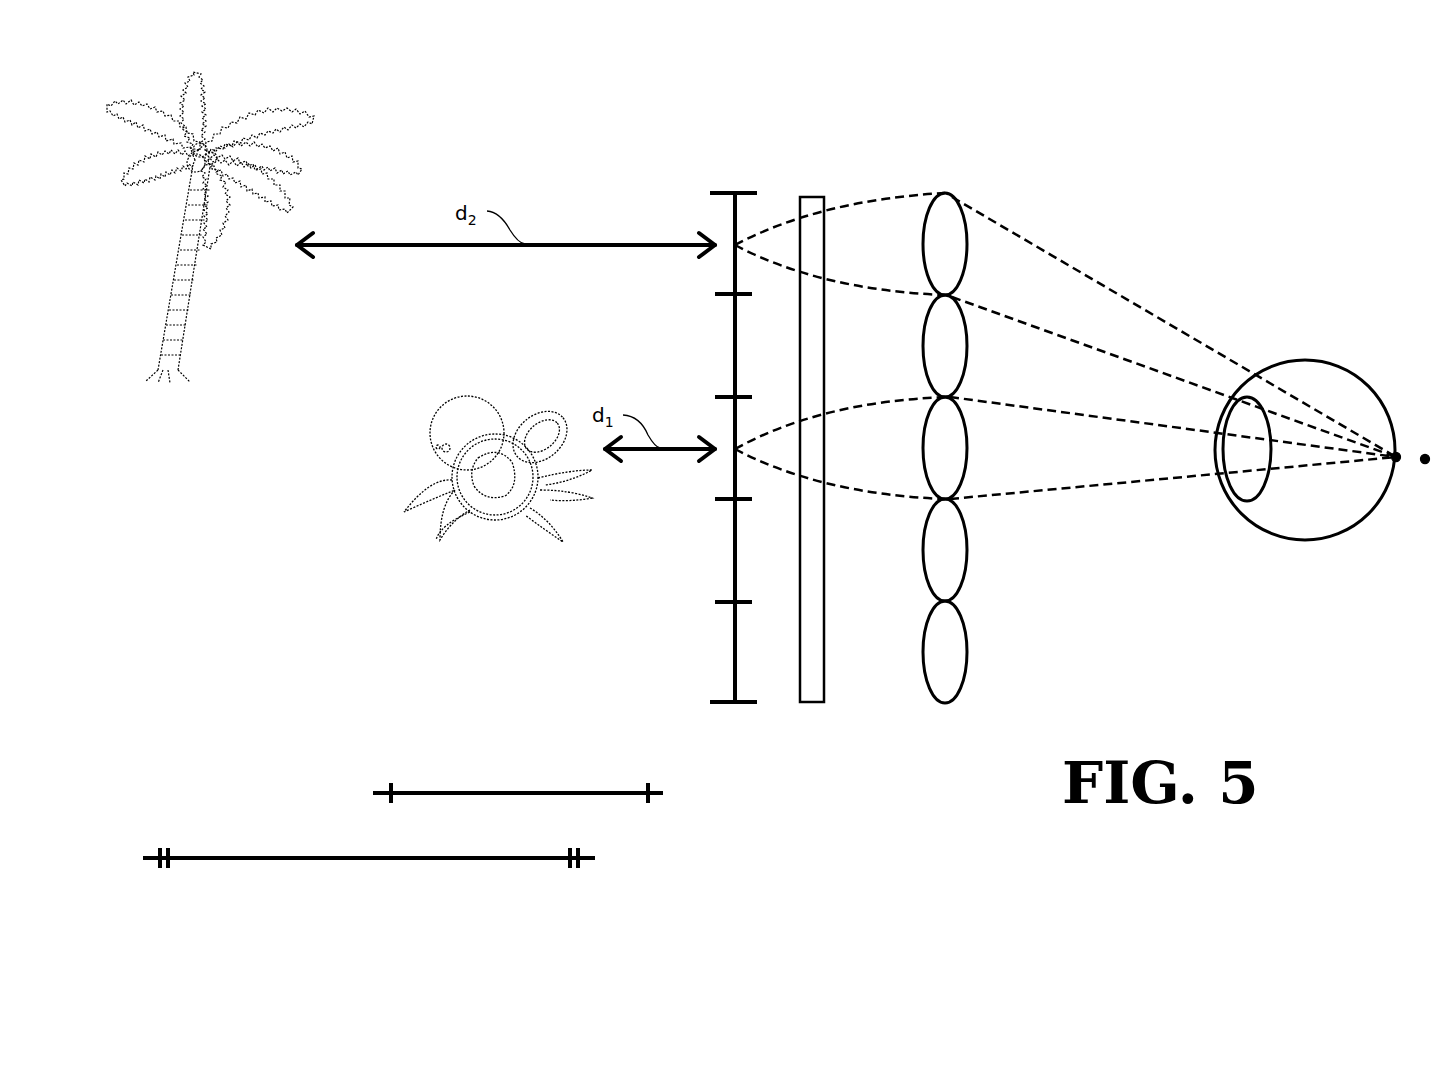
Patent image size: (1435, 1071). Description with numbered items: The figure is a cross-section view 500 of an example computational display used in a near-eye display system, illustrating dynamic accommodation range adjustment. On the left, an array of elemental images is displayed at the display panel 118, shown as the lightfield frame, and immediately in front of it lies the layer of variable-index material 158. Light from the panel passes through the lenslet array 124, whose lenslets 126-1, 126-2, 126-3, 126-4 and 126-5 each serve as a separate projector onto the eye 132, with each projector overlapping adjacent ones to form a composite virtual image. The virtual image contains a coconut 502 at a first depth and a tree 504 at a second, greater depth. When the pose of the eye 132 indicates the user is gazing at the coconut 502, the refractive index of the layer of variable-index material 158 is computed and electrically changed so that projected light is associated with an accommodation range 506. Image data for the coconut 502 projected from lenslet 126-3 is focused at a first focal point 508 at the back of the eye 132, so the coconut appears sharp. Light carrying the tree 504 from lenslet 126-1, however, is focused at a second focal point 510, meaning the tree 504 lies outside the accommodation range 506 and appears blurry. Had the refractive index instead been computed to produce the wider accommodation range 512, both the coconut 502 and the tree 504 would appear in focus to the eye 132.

The cross-section view 500 is at (1242, 120).
The display panel 118 is at (740, 726).
The layer of variable-index material 158 is at (816, 714).
The lenslet array 124 is at (924, 186).
The lenslet 126-1 is at (955, 281).
The lenslet 126-2 is at (955, 383).
The lenslet 126-3 is at (955, 485).
The lenslet 126-4 is at (955, 587).
The lenslet 126-5 is at (955, 689).
The eye 132 is at (1370, 380).
The first focal point 508 is at (1393, 463).
The second focal point 510 is at (1423, 465).
The coconut 502 is at (433, 520).
The tree 504 is at (202, 363).
The accommodation range 506 is at (518, 792).
The accommodation range 512 is at (427, 860).